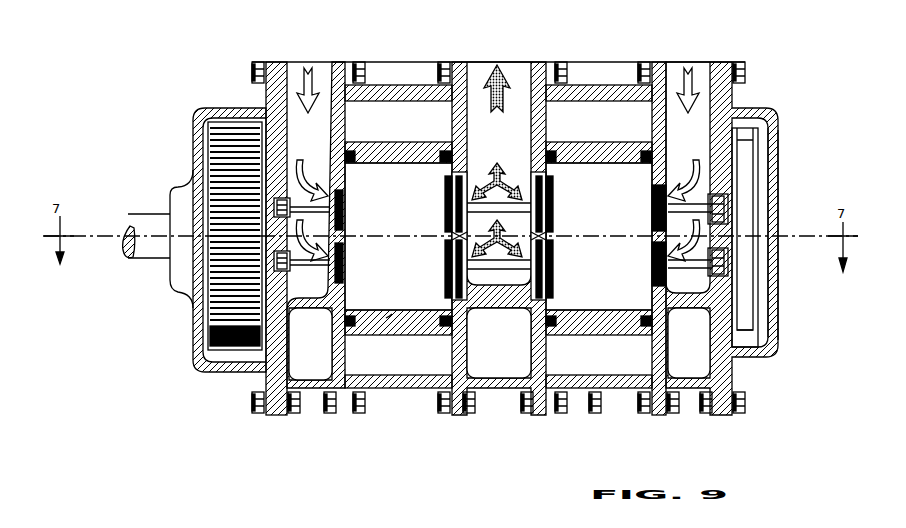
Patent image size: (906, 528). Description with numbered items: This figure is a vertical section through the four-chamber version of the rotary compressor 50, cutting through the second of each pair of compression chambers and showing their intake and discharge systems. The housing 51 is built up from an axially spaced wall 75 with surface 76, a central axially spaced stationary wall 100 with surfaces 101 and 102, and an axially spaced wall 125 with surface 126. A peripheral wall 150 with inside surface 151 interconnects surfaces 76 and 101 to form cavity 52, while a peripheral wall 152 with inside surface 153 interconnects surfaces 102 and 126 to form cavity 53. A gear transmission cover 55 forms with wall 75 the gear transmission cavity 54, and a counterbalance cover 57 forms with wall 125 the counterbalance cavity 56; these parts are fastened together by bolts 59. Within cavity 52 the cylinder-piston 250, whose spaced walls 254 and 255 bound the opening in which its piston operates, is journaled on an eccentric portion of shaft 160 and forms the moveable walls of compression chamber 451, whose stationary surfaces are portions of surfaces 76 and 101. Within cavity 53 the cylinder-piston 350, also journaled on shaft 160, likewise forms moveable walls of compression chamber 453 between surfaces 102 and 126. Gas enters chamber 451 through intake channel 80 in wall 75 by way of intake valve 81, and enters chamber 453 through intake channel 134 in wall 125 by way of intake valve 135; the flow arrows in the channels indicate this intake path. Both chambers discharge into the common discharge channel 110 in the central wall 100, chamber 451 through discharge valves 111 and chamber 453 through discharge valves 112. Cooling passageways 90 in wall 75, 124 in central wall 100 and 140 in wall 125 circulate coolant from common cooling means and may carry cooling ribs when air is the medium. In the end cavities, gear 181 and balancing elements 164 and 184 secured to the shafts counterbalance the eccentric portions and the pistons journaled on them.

The rotary compressor 50 is at (764, 110).
The housing 51 is at (203, 108).
The cavity 52 is at (392, 133).
The cavity 53 is at (599, 133).
The gear transmission cavity 54 is at (210, 330).
The gear transmission cover 55 is at (198, 310).
The counterbalance cavity 56 is at (770, 172).
The counterbalance cover 57 is at (777, 205).
The bolts 59 is at (256, 62).
The axially spaced wall 75 is at (281, 62).
The surface 76 is at (350, 104).
The intake channel 80 is at (318, 146).
The intake valve 81 is at (345, 212).
The cooling chamber or passageway 90 is at (285, 352).
The central axially spaced stationary wall 100 is at (538, 62).
The surface 101 is at (452, 119).
The surface 102 is at (557, 104).
The discharge channel 110 is at (509, 146).
The discharge valve 111 is at (449, 212).
The discharge valve 112 is at (550, 212).
The cooling chamber or passageway 124 is at (468, 352).
The axially spaced wall 125 is at (718, 62).
The surface 126 is at (652, 121).
The intake channel 134 is at (699, 146).
The intake valve 135 is at (656, 212).
The cooling chamber or passageway 140 is at (666, 330).
The peripheral wall 150 is at (405, 85).
The inside surface 151 is at (417, 378).
The peripheral wall 152 is at (608, 85).
The inside surface 153 is at (618, 378).
The shaft 160 is at (150, 214).
The balancing element 164 is at (748, 336).
The gear 181 is at (226, 346).
The balancing element 184 is at (746, 312).
The cylinder-piston 250 is at (408, 335).
The spaced wall 254 is at (406, 163).
The spaced wall 255 is at (388, 318).
The cylinder-piston 350 is at (606, 163).
The compression chamber 451 is at (414, 245).
The compression chamber 453 is at (619, 245).